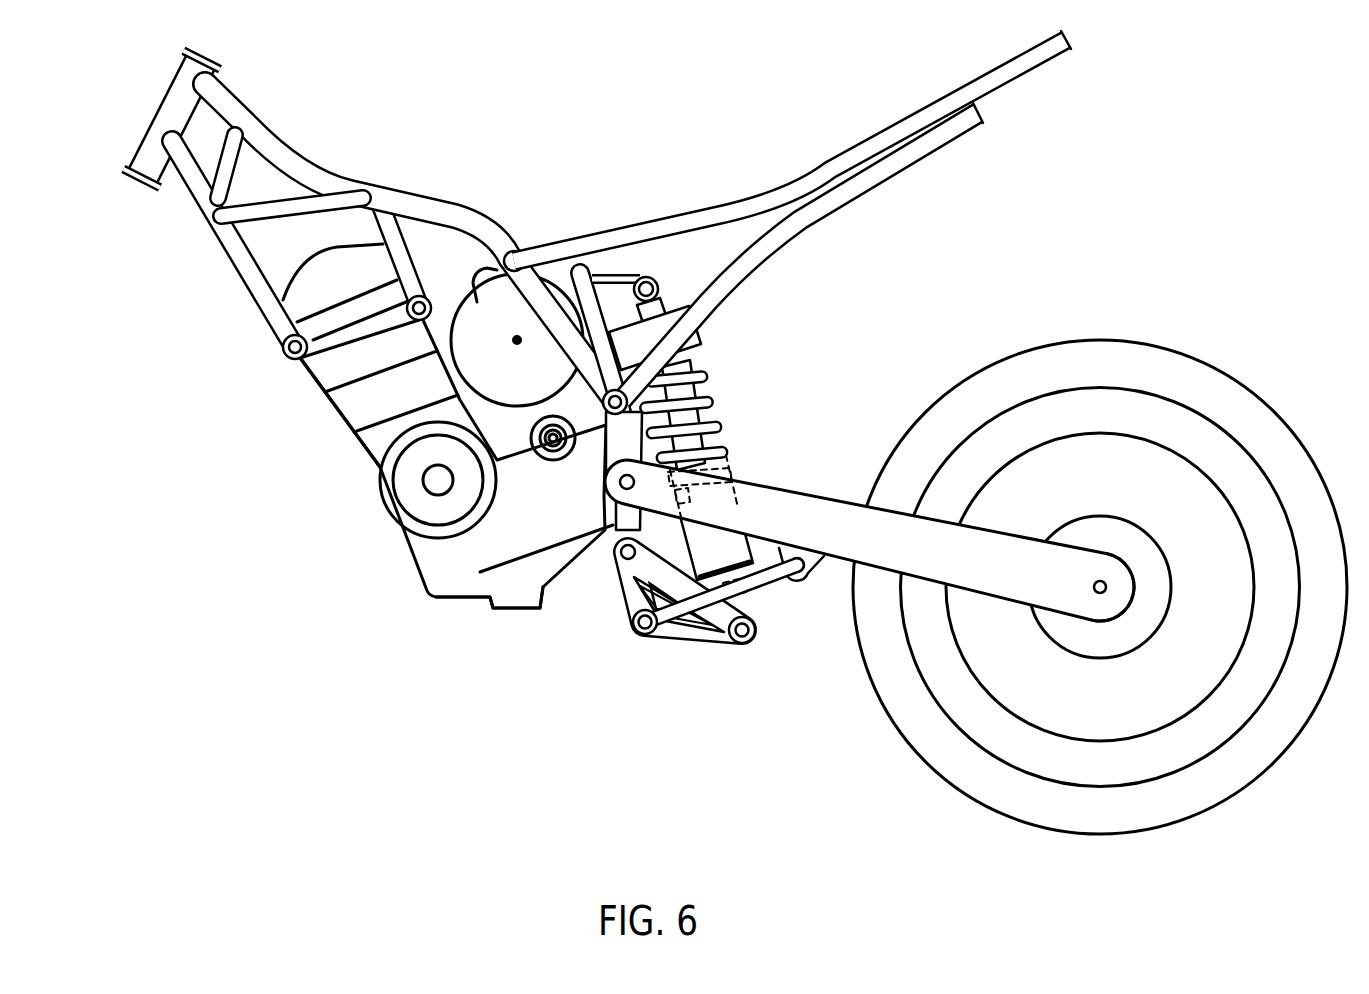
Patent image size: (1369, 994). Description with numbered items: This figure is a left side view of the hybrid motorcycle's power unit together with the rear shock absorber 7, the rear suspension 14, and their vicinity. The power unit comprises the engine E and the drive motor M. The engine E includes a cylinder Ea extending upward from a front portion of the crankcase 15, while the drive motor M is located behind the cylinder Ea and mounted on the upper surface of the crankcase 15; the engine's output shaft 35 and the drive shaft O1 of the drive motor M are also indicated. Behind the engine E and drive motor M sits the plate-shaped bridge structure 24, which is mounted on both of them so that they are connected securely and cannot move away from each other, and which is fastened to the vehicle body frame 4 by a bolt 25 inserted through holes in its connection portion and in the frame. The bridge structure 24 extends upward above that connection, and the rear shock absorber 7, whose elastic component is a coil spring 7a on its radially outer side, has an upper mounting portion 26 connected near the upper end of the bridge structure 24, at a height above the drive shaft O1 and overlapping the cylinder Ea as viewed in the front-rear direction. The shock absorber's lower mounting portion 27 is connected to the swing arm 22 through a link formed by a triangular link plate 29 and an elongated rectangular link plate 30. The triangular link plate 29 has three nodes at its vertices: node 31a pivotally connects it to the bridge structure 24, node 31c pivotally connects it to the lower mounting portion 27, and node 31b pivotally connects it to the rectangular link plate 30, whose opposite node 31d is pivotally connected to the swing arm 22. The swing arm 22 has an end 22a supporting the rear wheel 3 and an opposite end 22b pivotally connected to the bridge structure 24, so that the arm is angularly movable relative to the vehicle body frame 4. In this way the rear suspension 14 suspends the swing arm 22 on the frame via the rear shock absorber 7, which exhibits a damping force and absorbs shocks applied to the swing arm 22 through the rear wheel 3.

The rear wheel 3 is at (1108, 338).
The vehicle body frame 4 is at (887, 127).
The rear shock absorber 7 is at (702, 343).
The coil spring 7a is at (707, 378).
The rear suspension 14 is at (848, 776).
The crankcase 15 is at (488, 641).
The swing arm 22 is at (843, 651).
The end of swing arm 22a is at (1123, 600).
The end of swing arm 22b is at (604, 435).
The bridge structure 24 is at (604, 500).
The bolt 25 is at (598, 318).
The upper mounting portion 26 is at (647, 281).
The lower mounting portion 27 is at (755, 640).
The triangular link plate 29 is at (703, 642).
The rectangular link plate 30 is at (770, 585).
The node 31a is at (624, 562).
The node 31b is at (647, 636).
The node 31c is at (745, 645).
The node 31d is at (799, 555).
The output shaft 35 is at (425, 480).
The engine E is at (391, 435).
The cylinder Ea is at (355, 413).
The drive motor M is at (468, 265).
The drive shaft O1 is at (517, 336).